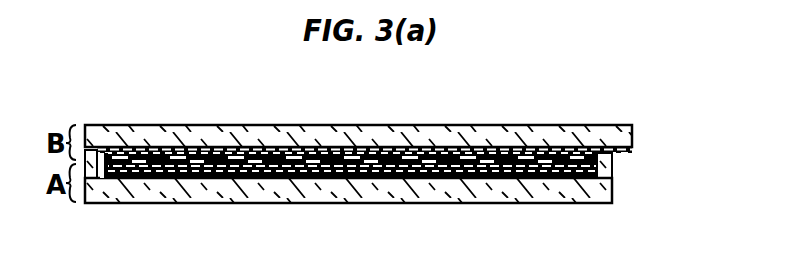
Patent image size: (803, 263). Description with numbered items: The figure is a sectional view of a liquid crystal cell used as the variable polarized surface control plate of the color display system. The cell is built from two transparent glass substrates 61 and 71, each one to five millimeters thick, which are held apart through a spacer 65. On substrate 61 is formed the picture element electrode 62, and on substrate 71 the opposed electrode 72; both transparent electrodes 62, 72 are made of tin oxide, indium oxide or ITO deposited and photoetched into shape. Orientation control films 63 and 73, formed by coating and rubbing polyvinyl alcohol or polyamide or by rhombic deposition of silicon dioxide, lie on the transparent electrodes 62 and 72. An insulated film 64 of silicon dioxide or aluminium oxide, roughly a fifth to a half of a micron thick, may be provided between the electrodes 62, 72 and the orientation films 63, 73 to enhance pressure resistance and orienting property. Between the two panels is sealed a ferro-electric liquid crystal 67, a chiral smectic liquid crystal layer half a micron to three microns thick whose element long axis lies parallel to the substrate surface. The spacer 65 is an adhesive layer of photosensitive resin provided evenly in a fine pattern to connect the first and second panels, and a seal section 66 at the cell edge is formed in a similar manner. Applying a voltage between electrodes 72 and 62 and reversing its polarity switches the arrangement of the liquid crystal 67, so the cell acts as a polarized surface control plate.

The substrate 61 is at (577, 193).
The transparent electrode 62 is at (487, 165).
The orientation control film 63 is at (520, 170).
The insulated film 64 is at (441, 170).
The spacer 65 is at (163, 160).
The seal section 66 is at (610, 170).
The ferro-electric liquid crystal 67 is at (115, 152).
The substrate 71 is at (593, 135).
The transparent electrode 72 is at (457, 150).
The orientation control film 73 is at (377, 148).